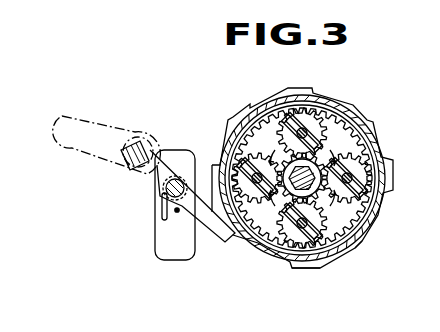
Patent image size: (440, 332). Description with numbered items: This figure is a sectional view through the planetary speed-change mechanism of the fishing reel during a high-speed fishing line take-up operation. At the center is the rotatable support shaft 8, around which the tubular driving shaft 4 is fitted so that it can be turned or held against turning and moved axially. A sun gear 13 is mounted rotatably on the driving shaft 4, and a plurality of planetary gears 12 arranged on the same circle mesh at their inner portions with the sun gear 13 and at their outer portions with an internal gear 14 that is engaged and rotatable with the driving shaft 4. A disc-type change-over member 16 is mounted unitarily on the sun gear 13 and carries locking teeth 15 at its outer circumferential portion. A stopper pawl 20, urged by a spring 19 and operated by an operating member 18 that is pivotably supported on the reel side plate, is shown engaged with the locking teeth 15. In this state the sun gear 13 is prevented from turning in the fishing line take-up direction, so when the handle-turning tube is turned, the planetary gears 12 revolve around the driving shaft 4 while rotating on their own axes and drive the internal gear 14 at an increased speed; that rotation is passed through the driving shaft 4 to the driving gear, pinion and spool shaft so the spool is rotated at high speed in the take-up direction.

The driving shaft 4 is at (258, 243).
The support shaft 8 is at (330, 160).
The planetary gears 12 is at (318, 118).
The sun gear 13 is at (272, 155).
The internal gear 14 is at (378, 218).
The locking teeth 15 is at (287, 266).
The change-over member 16 is at (360, 244).
The operating member 18 is at (117, 132).
The spring 19 is at (152, 217).
The stopper pawl 20 is at (215, 230).